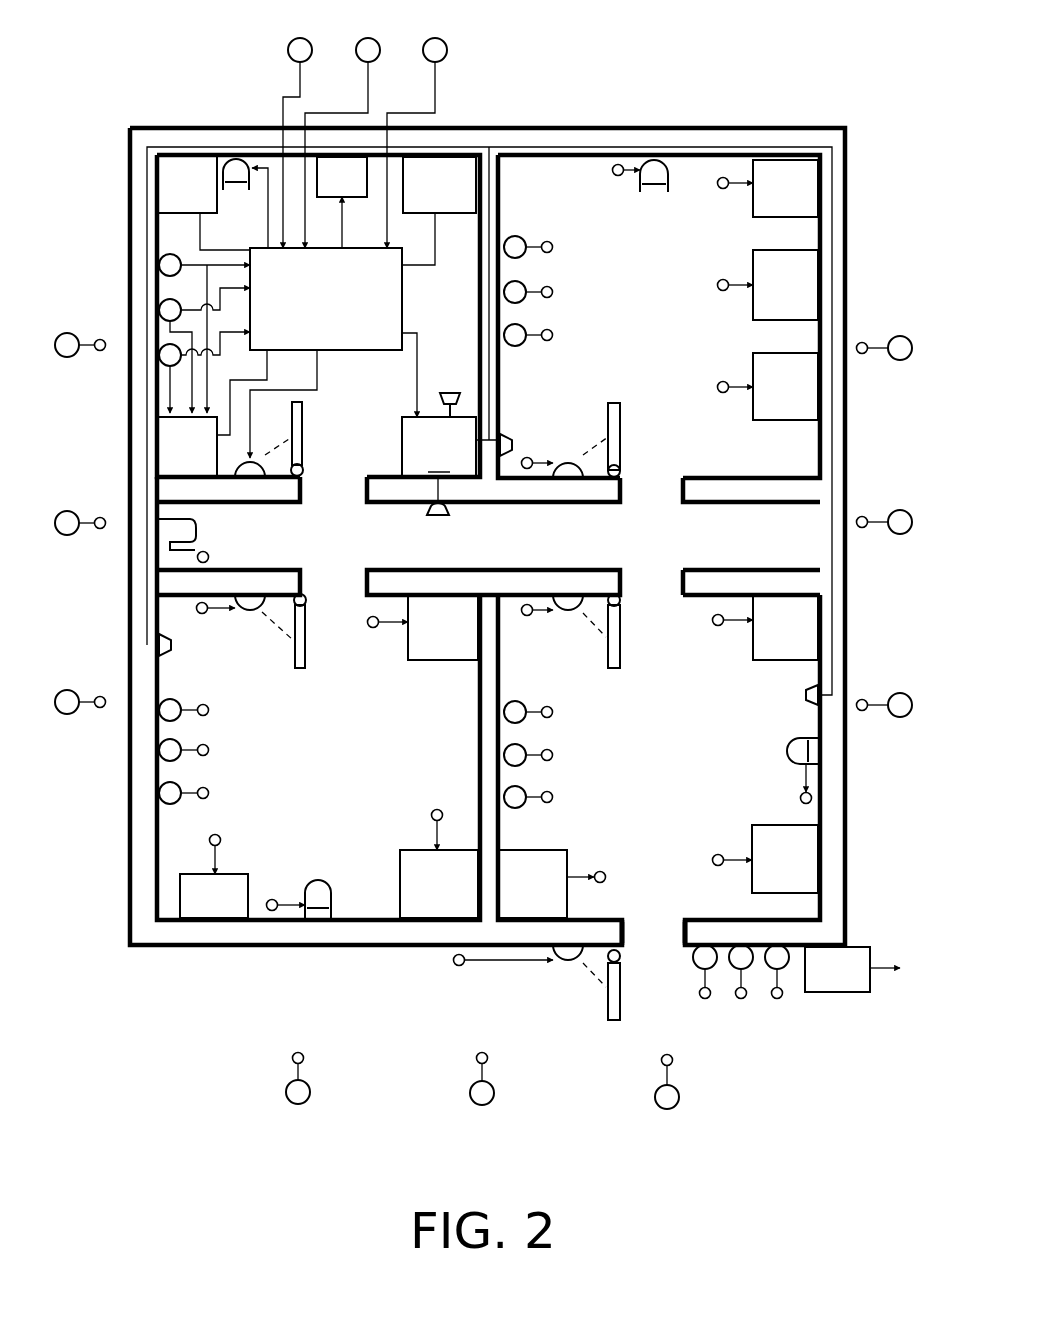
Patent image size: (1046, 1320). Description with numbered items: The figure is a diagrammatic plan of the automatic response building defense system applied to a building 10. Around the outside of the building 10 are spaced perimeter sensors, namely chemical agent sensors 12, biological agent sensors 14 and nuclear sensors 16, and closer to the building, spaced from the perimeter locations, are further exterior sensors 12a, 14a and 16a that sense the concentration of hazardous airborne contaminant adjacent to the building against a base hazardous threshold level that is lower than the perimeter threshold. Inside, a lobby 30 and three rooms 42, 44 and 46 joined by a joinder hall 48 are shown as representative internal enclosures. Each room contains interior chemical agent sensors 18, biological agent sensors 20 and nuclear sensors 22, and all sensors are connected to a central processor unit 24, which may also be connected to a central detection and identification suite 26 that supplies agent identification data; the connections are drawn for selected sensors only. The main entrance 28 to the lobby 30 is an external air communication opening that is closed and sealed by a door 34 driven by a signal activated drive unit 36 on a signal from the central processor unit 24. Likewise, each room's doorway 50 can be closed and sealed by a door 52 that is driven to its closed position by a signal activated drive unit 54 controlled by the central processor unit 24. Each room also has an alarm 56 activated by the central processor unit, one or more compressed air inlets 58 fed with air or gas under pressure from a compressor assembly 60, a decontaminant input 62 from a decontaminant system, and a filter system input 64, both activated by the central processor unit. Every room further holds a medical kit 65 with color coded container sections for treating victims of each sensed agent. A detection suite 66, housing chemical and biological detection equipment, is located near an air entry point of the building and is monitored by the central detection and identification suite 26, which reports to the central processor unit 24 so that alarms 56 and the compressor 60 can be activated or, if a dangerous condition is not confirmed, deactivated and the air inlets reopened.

The building 10 is at (165, 945).
The chemical agent sensors 12 is at (442, 38).
The chemical agent sensor adjacent to building 12a is at (718, 990).
The biological agent sensors 14 is at (362, 38).
The biological agent sensor adjacent to building 14a is at (752, 990).
The nuclear sensors 16 is at (295, 38).
The nuclear sensor adjacent to building 16a is at (786, 990).
The chemical agent sensors 18 is at (160, 258).
The biological agent sensors 20 is at (160, 303).
The nuclear sensors 22 is at (160, 356).
The central processor unit 24 is at (400, 292).
The central detection and identification suite 26 is at (158, 440).
The main entrance 28 is at (650, 945).
The lobby 30 is at (641, 759).
The door 34 is at (606, 1005).
The signal activated drive unit 36 is at (565, 975).
The room 42 is at (638, 304).
The room 44 is at (338, 424).
The room 46 is at (316, 752).
The joinder hall 48 is at (566, 542).
The doorways 50 is at (330, 575).
The doors 52 is at (302, 440).
The signal activated drive unit 54 is at (568, 462).
The alarm 56 is at (655, 192).
The compressed air inlets 58 is at (452, 395).
The compressor assembly 60 is at (439, 447).
The decontaminant input 62 is at (438, 157).
The filter system input 64 is at (345, 157).
The medical kit 65 is at (190, 156).
The detection suites 66 is at (850, 992).